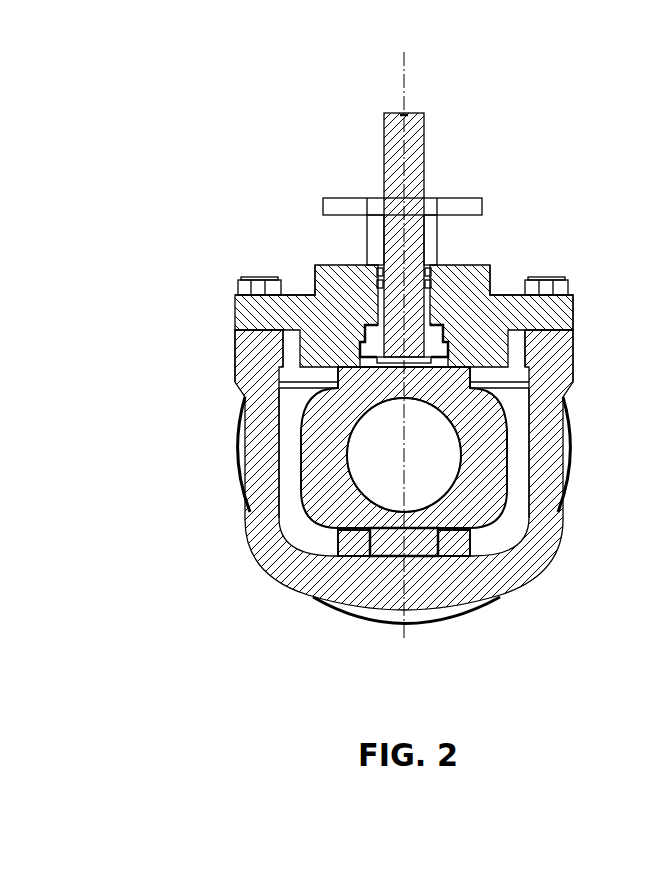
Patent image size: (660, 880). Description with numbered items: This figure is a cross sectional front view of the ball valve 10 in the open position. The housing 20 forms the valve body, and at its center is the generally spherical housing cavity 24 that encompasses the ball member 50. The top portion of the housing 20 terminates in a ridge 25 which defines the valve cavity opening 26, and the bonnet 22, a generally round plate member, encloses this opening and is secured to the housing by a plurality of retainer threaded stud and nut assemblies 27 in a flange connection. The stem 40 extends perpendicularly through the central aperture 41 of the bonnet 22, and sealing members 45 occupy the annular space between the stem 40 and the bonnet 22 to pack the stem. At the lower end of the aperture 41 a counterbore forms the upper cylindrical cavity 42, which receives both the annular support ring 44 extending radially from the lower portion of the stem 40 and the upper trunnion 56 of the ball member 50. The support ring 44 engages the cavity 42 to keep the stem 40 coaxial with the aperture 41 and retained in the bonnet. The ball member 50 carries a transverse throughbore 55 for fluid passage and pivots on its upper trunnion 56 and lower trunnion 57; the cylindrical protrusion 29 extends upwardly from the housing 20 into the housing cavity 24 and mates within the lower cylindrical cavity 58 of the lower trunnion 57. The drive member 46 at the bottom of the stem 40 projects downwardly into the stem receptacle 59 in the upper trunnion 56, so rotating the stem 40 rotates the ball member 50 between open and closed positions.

The ball valve 10 is at (266, 126).
The housing 20 is at (262, 487).
The bonnet 22 is at (317, 292).
The housing cavity 24 is at (283, 438).
The ridge 25 is at (562, 360).
The valve cavity opening 26 is at (292, 367).
The retainer threaded stud and nut assemblies 27 is at (570, 288).
The cylindrical protrusion 29 is at (422, 548).
The stem 40 is at (418, 138).
The aperture 41 is at (430, 285).
The upper cylindrical cavity 42 is at (490, 268).
The annular support ring 44 is at (338, 266).
The sealing members 45 is at (450, 268).
The drive member 46 is at (402, 350).
The ball member 50 is at (492, 452).
The throughbore 55 is at (430, 480).
The upper trunnion 56 is at (300, 323).
The lower trunnion 57 is at (345, 556).
The lower cylindrical cavity 58 is at (400, 528).
The stem receptacle 59 is at (366, 265).